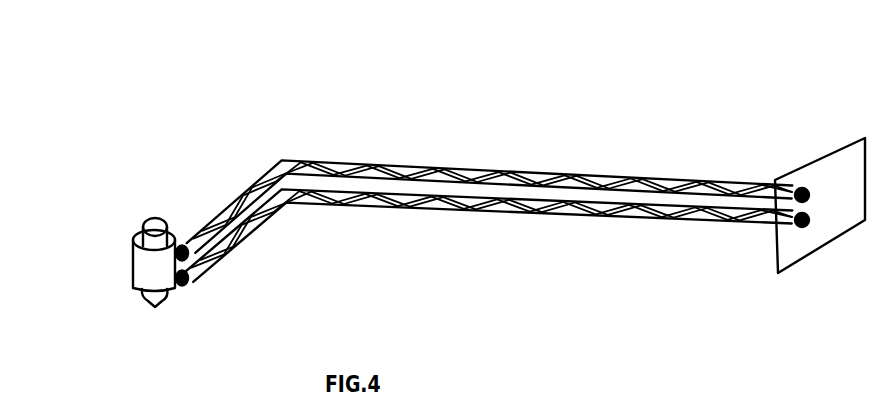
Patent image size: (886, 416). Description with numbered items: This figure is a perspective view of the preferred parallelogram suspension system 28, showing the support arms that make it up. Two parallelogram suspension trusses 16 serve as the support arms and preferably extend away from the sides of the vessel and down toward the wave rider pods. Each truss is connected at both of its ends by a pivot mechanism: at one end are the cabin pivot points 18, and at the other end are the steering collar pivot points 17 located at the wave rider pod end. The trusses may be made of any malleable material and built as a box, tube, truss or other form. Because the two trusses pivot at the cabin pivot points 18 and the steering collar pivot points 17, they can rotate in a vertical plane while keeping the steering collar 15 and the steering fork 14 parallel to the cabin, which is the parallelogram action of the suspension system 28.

The steering fork 14 is at (147, 223).
The steering collar 15 is at (133, 262).
The parallelogram suspension trusses 16 is at (332, 178).
The steering collar pivot points 17 is at (188, 240).
The cabin pivot points 18 is at (808, 182).
The suspension system 28 is at (480, 152).